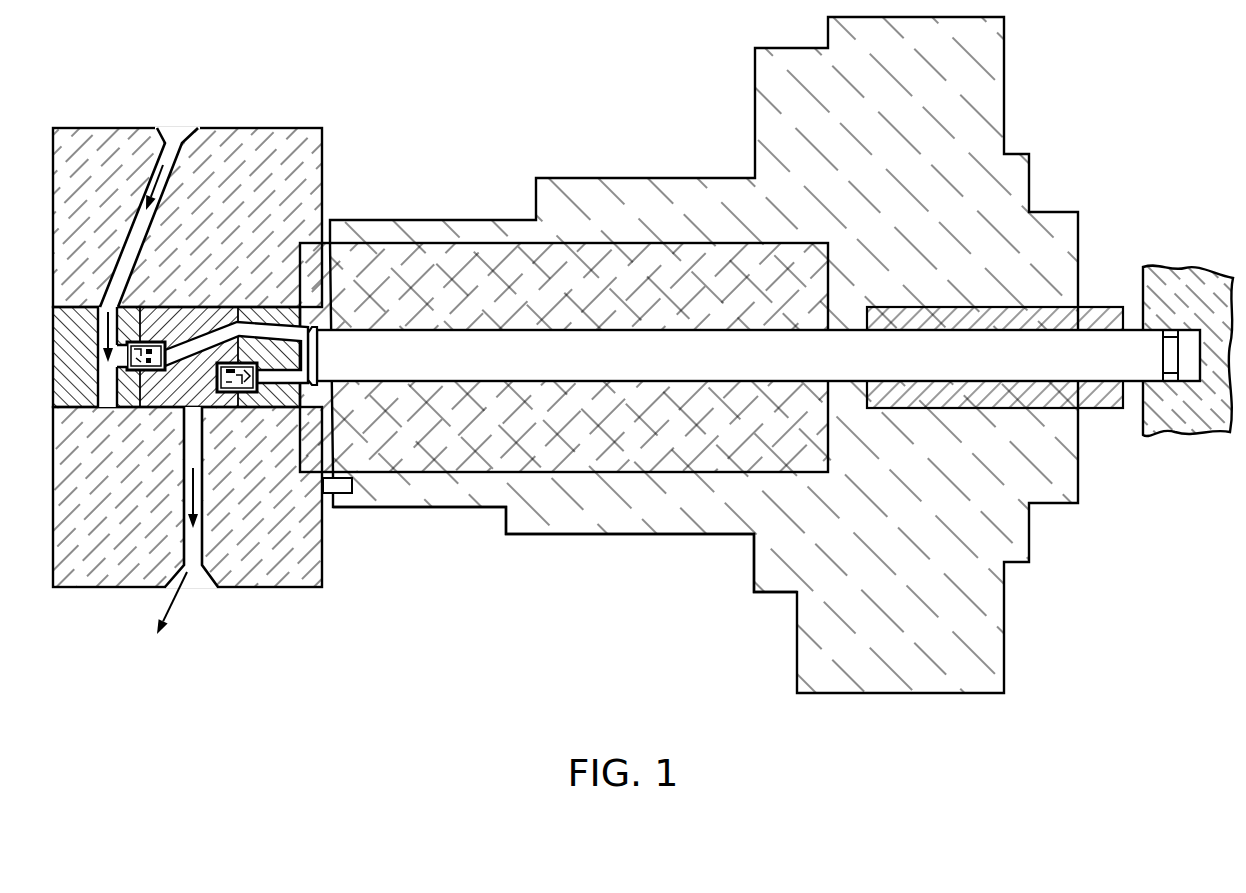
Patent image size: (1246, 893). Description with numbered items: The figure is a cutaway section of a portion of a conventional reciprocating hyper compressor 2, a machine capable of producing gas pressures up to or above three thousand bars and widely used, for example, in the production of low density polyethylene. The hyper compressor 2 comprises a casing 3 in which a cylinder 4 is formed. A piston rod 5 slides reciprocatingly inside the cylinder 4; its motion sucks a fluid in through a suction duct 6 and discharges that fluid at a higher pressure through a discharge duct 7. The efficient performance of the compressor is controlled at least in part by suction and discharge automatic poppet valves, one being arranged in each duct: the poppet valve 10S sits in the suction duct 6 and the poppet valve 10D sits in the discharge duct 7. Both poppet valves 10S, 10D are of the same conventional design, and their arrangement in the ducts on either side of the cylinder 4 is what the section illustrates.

The hyper compressor 2 is at (577, 84).
The casing 3 is at (630, 508).
The cylinder 4 is at (353, 282).
The piston rod 5 is at (438, 352).
The suction duct 6 is at (173, 147).
The discharge duct 7 is at (193, 563).
The poppet valve in the suction duct 10S is at (157, 342).
The poppet valve in the discharge duct 10D is at (258, 392).